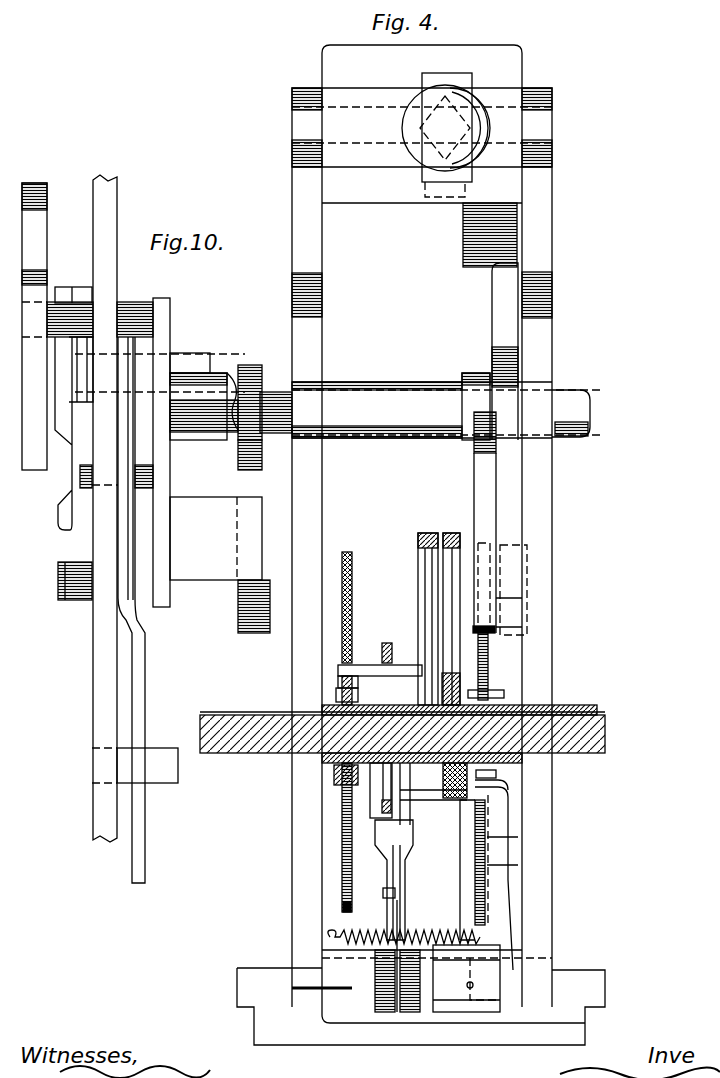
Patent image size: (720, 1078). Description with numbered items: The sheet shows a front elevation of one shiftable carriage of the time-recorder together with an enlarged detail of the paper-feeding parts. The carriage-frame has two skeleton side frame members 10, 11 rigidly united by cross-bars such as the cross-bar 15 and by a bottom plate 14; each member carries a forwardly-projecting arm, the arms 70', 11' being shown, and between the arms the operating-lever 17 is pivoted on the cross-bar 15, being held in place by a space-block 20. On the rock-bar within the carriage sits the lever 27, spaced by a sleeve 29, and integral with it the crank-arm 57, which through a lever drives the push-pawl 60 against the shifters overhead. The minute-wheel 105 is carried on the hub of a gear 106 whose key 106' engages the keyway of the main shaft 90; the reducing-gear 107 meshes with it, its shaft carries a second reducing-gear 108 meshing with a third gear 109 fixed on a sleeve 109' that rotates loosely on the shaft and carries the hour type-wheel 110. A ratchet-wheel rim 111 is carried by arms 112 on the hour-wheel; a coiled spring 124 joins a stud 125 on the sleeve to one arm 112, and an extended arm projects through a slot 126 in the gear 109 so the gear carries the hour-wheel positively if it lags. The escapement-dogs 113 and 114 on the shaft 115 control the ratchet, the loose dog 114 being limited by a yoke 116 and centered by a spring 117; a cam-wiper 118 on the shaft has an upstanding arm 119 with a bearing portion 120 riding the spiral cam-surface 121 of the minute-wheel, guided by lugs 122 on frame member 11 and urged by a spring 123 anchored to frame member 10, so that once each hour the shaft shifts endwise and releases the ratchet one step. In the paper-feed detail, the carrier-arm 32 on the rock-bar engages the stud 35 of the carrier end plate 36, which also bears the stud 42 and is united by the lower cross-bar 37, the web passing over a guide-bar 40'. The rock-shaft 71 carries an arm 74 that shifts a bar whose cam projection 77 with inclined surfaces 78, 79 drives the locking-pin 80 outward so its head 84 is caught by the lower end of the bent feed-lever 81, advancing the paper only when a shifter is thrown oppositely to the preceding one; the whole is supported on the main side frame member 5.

In FIG. 4, the space-block 20 is at (335, 88).
In FIG. 4, the side frame member 10 is at (305, 512).
In FIG. 4, the cross-bar 15 is at (292, 124).
In FIG. 4, the frame upright 70' is at (277, 207).
In FIG. 4, the forwardly-projecting arm 11' is at (567, 197).
In FIG. 4, the operating-lever 17 is at (446, 135).
In FIG. 4, the lever 27 is at (520, 305).
In FIG. 4, the crank-arm 57 is at (474, 482).
In FIG. 4, the side frame member 11 is at (545, 579).
In FIG. 4, the space block or sleeve 29 is at (372, 392).
In FIG. 4, the push-pawl 60 is at (450, 533).
In FIG. 4, the hour type-wheel 110 is at (420, 585).
In FIG. 4, the slot 126 is at (342, 665).
In FIG. 4, the ratchet-wheel rim 111 is at (382, 650).
In FIG. 4, the arms 112 is at (379, 683).
In FIG. 4, the minute-wheel 105 is at (465, 680).
In FIG. 4, the spirally-formed cam-surface 121 is at (470, 690).
In FIG. 4, the gear 106 is at (464, 699).
In FIG. 4, the key or feather 106' is at (470, 732).
In FIG. 4, the coiled contractile spring 124 is at (385, 730).
In FIG. 4, the sleeve 109' is at (298, 773).
In FIG. 4, the second reducing-gear 108 is at (340, 775).
In FIG. 4, the stud 125 is at (380, 790).
In FIG. 4, the third gear 109 is at (355, 805).
In FIG. 4, the controlling-dog 113 is at (385, 870).
In FIG. 4, the yoke 116 is at (383, 893).
In FIG. 4, the controlling-dog 114 is at (350, 935).
In FIG. 4, the guide-lugs 122 is at (495, 848).
In FIG. 4, the bearing portion 120 is at (475, 785).
In FIG. 4, the upstanding arm 119 is at (498, 884).
In FIG. 4, the reducing-gear 107 is at (485, 903).
In FIG. 4, the cam-wiper 118 is at (500, 975).
In FIG. 4, the shaft 115 is at (340, 995).
In FIG. 4, the contractile spring 123 is at (372, 985).
In FIG. 4, the coiled spring 117 is at (397, 1010).
In FIG. 4, the bottom plate 14 is at (405, 1042).
In FIG. 10, the carrier-arm 32 is at (45, 195).
In FIG. 10, the side frame member 5 is at (118, 218).
In FIG. 10, the arm 74 is at (80, 290).
In FIG. 10, the stud 35 is at (132, 305).
In FIG. 10, the end plate 36 is at (170, 324).
In FIG. 10, the rock-shaft 71 is at (192, 365).
In FIG. 10, the guide-bar 40' is at (210, 387).
In FIG. 10, the cam projection 77 is at (72, 478).
In FIG. 10, the inclined surface 78 is at (72, 460).
In FIG. 10, the inclined surface 79 is at (68, 525).
In FIG. 10, the head 84 is at (155, 477).
In FIG. 10, the locking-pin 80 is at (140, 488).
In FIG. 10, the bent feed-lever 81 is at (146, 823).
In FIG. 10, the stud 42 is at (70, 585).
In FIG. 10, the lower cross-bar 37 is at (202, 572).
In FIG. 10, the main shaft 90 is at (150, 755).